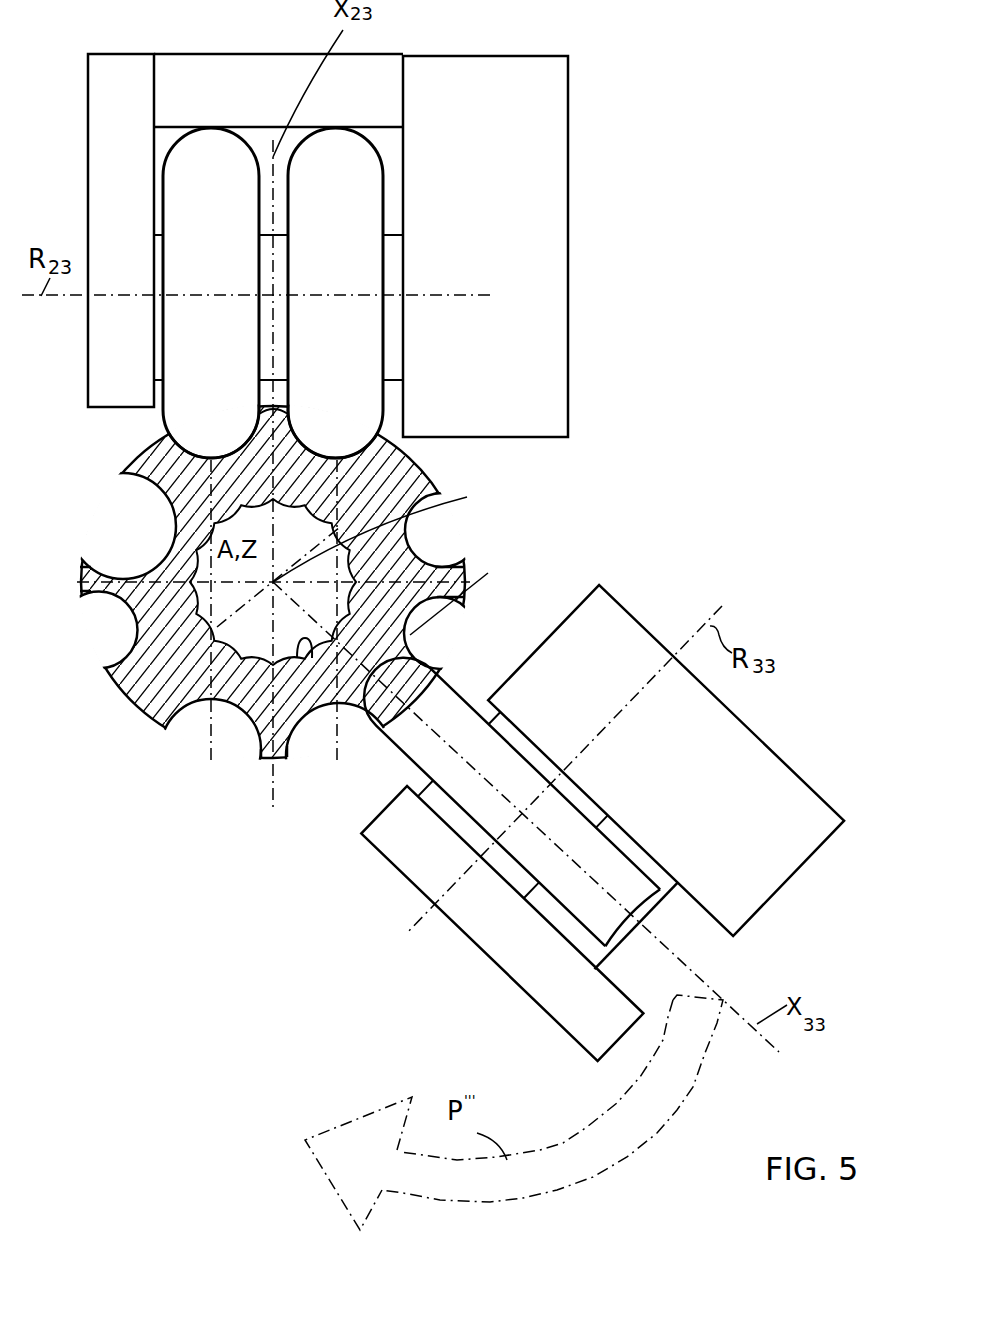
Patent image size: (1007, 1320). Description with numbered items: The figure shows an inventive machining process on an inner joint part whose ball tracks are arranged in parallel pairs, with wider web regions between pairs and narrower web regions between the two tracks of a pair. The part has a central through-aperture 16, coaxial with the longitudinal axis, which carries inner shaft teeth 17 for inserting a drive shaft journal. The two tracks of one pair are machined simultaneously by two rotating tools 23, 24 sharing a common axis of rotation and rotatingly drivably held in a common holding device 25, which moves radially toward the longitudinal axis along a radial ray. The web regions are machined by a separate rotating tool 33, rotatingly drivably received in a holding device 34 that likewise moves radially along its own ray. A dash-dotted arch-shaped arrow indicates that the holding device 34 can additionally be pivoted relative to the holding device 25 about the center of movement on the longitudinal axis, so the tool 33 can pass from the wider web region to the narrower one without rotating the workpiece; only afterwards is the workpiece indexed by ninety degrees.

The rotating tool 24 is at (213, 152).
The rotating tool 23 is at (332, 147).
The holding device 25 is at (562, 172).
The through-aperture 16 is at (252, 637).
The inner shaft teeth 17 is at (306, 646).
The rotating tool 33 is at (501, 795).
The holding device 34 is at (621, 765).